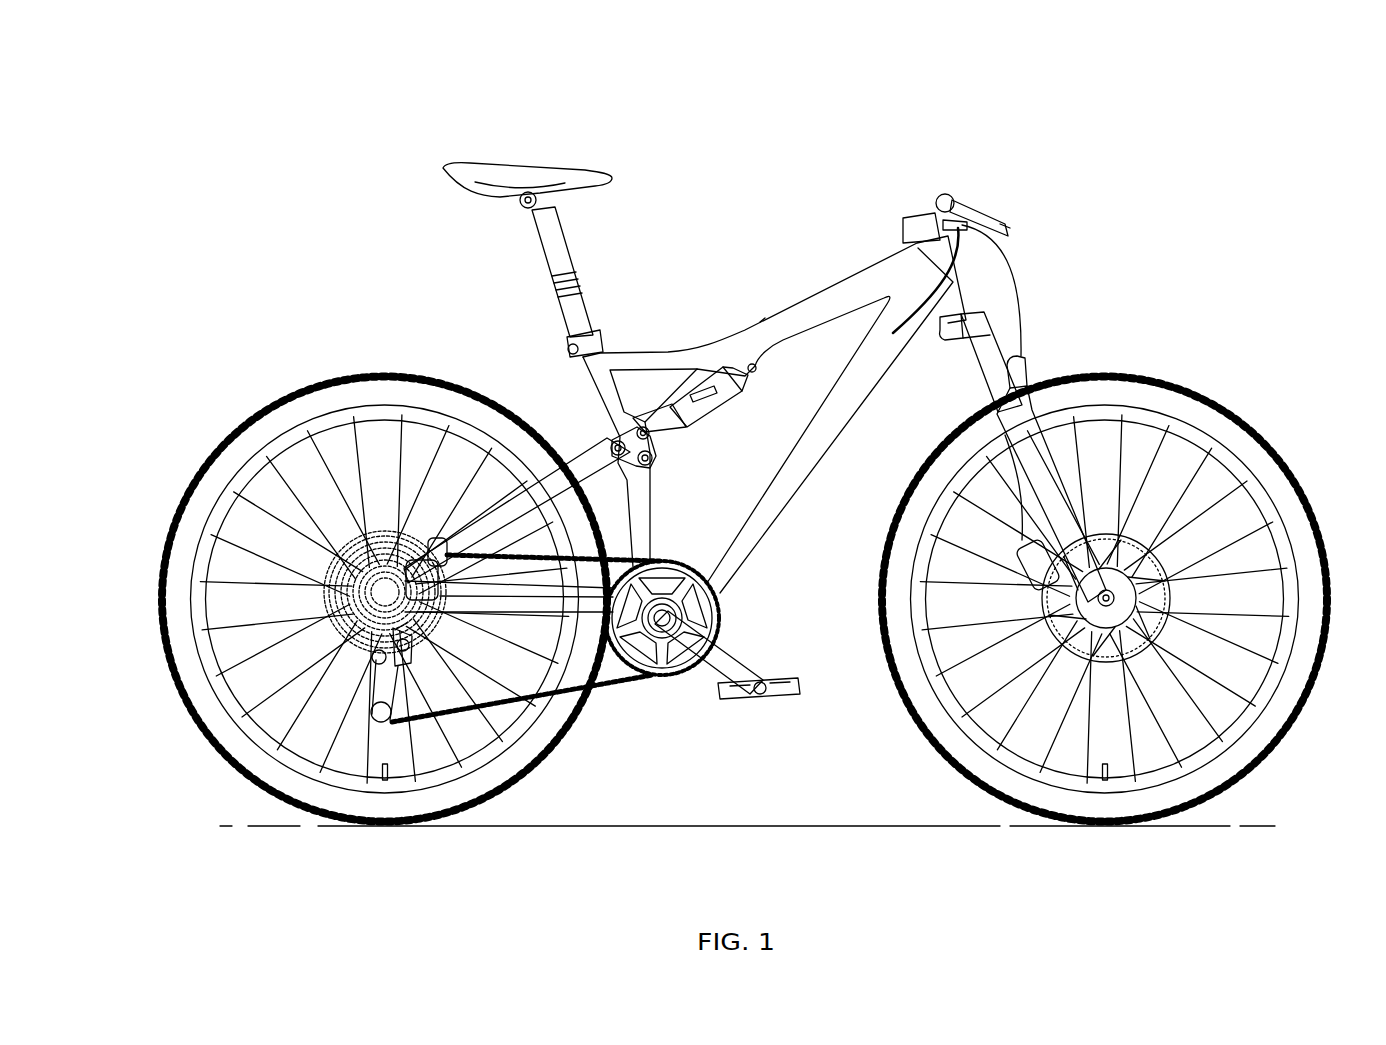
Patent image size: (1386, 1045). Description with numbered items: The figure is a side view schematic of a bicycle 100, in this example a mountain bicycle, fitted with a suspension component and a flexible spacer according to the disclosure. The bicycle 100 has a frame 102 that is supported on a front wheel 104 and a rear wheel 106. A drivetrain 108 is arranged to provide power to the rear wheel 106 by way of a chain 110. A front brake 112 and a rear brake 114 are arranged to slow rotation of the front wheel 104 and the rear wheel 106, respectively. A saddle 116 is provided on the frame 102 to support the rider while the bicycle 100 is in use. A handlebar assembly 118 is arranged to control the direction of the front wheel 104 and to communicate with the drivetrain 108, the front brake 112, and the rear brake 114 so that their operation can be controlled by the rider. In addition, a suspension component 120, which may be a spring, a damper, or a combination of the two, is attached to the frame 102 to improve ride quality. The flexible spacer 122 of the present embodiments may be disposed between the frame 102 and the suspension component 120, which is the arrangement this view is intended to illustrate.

The bicycle 100 is at (262, 134).
The frame 102 is at (818, 300).
The front wheel 104 is at (1268, 490).
The rear wheel 106 is at (246, 460).
The drivetrain 108 is at (801, 768).
The chain 110 is at (613, 688).
The front brake 112 is at (1043, 600).
The rear brake 114 is at (379, 528).
The saddle 116 is at (548, 165).
The handlebar assembly 118 is at (1036, 162).
The suspension component 120 is at (705, 378).
The flexible spacer 122 is at (721, 325).